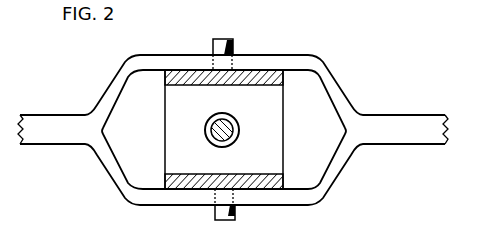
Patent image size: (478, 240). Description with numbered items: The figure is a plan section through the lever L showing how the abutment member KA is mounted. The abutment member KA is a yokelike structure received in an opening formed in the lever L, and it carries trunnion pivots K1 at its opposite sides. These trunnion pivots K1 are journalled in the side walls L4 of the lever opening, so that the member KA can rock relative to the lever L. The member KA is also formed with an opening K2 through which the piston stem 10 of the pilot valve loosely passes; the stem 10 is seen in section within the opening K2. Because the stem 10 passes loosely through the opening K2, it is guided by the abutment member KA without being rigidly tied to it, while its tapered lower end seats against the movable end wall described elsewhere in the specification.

The lever L is at (50, 140).
The side walls L4 is at (173, 223).
The abutment member KA is at (178, 107).
The trunnion pivots K1 is at (233, 42).
The opening K2 is at (240, 132).
The piston stem 10 is at (228, 119).